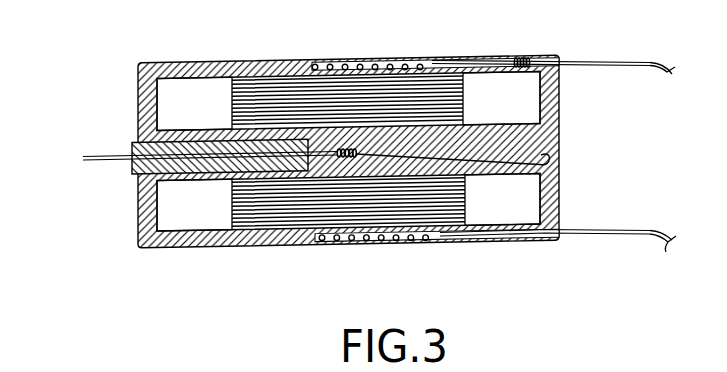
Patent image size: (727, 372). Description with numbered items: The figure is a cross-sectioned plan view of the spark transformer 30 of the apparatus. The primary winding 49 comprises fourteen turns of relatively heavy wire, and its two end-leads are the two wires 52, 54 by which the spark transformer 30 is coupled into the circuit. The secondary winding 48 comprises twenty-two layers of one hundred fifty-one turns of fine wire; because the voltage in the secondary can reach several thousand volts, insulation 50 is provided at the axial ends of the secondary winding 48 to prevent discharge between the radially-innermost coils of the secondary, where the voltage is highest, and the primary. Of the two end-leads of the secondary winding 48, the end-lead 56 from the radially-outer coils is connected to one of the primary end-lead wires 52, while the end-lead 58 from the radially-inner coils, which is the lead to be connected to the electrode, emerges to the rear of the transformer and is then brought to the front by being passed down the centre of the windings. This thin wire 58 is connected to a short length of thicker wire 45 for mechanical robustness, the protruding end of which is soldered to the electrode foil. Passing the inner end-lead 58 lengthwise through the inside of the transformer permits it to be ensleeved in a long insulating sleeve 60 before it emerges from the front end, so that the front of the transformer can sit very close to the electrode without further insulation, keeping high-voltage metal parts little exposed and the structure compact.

The spark transformer 30 is at (154, 256).
The thicker wire 45 is at (88, 161).
The secondary winding 48 is at (298, 97).
The primary winding 49 is at (375, 65).
The insulation 50 is at (167, 93).
The primary end-lead wire 52 is at (637, 62).
The primary end-lead wire 54 is at (650, 233).
The outer end-lead of secondary winding 56 is at (533, 70).
The inner end-lead of secondary winding 58 is at (528, 160).
The insulating sleeve 60 is at (134, 146).